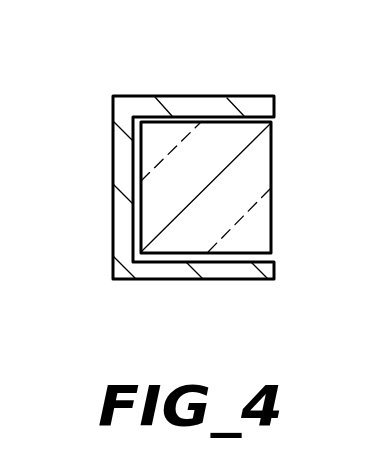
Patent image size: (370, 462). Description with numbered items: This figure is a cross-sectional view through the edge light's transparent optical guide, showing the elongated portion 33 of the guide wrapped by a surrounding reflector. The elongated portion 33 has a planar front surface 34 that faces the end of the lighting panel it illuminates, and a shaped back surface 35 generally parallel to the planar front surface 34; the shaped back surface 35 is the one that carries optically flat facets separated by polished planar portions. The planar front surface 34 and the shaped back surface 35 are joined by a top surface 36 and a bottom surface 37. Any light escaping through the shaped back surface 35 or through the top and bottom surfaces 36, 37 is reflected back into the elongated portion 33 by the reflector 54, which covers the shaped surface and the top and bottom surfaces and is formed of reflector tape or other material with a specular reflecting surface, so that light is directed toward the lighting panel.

The elongated portion 33 is at (165, 243).
The planar front surface 34 is at (272, 210).
The shaped back surface 35 is at (142, 210).
The top surface 36 is at (221, 128).
The bottom surface 37 is at (229, 255).
The reflector 54 is at (147, 106).